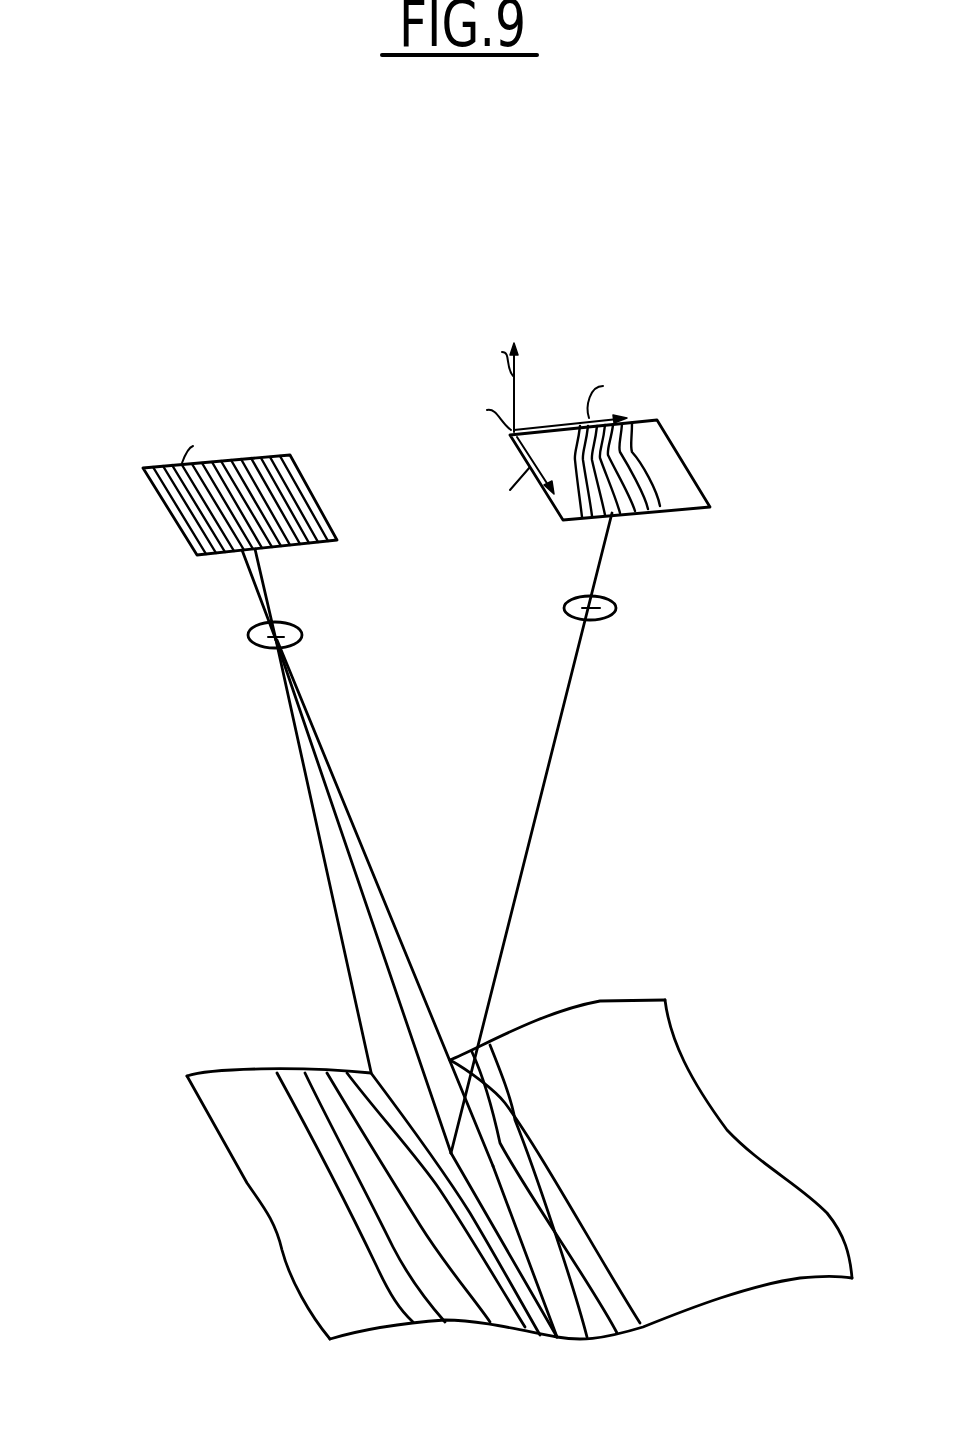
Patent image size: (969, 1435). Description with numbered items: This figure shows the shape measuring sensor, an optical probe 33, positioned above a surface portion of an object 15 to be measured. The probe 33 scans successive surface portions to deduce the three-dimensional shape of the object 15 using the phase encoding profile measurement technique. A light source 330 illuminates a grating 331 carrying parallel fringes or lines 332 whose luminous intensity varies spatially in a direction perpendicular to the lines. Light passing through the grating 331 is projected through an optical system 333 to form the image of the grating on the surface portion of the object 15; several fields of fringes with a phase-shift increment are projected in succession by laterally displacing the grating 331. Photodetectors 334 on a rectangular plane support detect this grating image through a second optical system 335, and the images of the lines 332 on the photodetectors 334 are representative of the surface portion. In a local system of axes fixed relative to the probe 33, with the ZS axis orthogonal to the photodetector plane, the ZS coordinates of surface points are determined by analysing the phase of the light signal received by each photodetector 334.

The optical probe 33 is at (670, 257).
The light source 330 is at (192, 340).
The grating 331 is at (171, 514).
The parallel fringes or lines 332 is at (187, 463).
The optical system 333 is at (247, 637).
The photodetectors 334 is at (684, 465).
The optical system 335 is at (617, 607).
The object 15 is at (223, 1097).